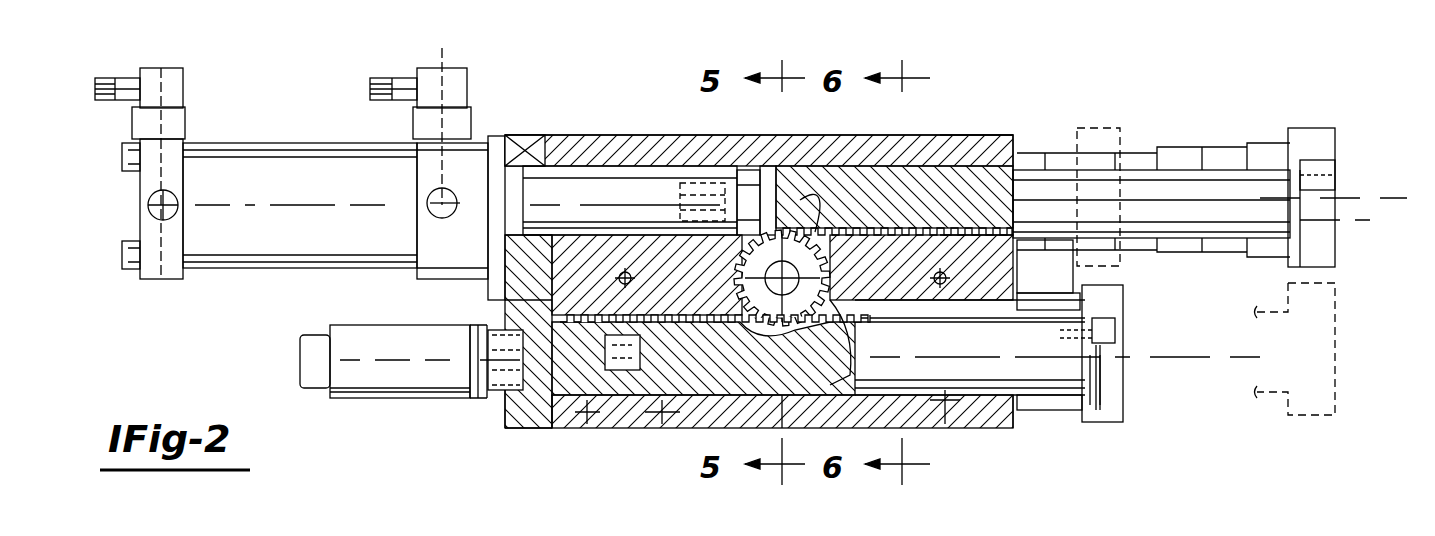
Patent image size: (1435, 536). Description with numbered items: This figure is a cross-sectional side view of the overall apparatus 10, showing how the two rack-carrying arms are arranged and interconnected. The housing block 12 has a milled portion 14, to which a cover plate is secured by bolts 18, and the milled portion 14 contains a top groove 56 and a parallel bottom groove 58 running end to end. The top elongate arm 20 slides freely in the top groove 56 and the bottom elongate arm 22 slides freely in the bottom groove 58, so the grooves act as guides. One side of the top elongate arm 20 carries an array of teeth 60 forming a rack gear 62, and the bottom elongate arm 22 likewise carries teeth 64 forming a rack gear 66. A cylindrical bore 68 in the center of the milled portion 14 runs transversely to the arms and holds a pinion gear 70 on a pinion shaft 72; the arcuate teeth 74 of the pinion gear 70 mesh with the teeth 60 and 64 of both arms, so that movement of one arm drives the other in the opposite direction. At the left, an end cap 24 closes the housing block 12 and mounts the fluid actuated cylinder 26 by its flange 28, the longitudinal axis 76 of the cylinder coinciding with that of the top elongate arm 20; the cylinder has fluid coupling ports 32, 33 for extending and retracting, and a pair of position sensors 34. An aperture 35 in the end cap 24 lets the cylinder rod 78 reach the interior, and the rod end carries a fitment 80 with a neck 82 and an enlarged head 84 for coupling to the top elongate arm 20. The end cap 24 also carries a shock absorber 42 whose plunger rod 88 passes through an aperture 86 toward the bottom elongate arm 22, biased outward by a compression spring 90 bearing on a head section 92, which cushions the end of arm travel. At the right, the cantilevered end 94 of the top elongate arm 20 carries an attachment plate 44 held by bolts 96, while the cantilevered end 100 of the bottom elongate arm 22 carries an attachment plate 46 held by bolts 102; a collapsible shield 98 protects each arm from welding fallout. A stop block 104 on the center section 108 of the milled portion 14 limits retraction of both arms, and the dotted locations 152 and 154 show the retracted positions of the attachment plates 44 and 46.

The overall apparatus 10 is at (926, 78).
The housing block 12 is at (568, 135).
The milled portion 14 is at (625, 135).
The bolts 18 is at (968, 150).
The top elongate arm 20 is at (1151, 204).
The bottom elongate arm 22 is at (1020, 410).
The end cap 24 is at (527, 135).
The fluid actuated cylinder 26 is at (272, 143).
The flange 28 is at (496, 136).
The fluid coupling port 32 is at (140, 210).
The fluid coupling port 33 is at (442, 279).
The position sensors 34 is at (165, 68).
The aperture 35 is at (435, 279).
The shock absorber 42 is at (360, 398).
The attachment plate 44 is at (1313, 128).
The attachment plate 46 is at (1120, 420).
The top groove 56 is at (870, 175).
The bottom groove 58 is at (948, 400).
The teeth 60 is at (1008, 240).
The rack gear 62 is at (945, 230).
The teeth 64 is at (660, 395).
The rack gear 66 is at (658, 320).
The cylindrical bore 68 is at (846, 282).
The pinion gear 70 is at (711, 355).
The pinion shaft 72 is at (848, 348).
The teeth 74 is at (812, 232).
The longitudinal axis 76 is at (345, 205).
The cylinder rod 78 is at (630, 200).
The fitment 80 is at (702, 185).
The neck 82 is at (746, 180).
The enlarged head 84 is at (768, 175).
The aperture 86 is at (510, 400).
The plunger rod 88 is at (505, 320).
The compression spring 90 is at (548, 400).
The head section 92 is at (545, 390).
The cantilevered end 94 is at (1225, 147).
The bolts 96 is at (1337, 175).
The collapsible shield 98 is at (1178, 150).
The cantilevered end 100 is at (1100, 378).
The bolts 102 is at (1115, 335).
The stop block 104 is at (1077, 267).
The center section 108 is at (985, 325).
The dotted location 152 is at (1098, 128).
The dotted location 154 is at (1345, 385).